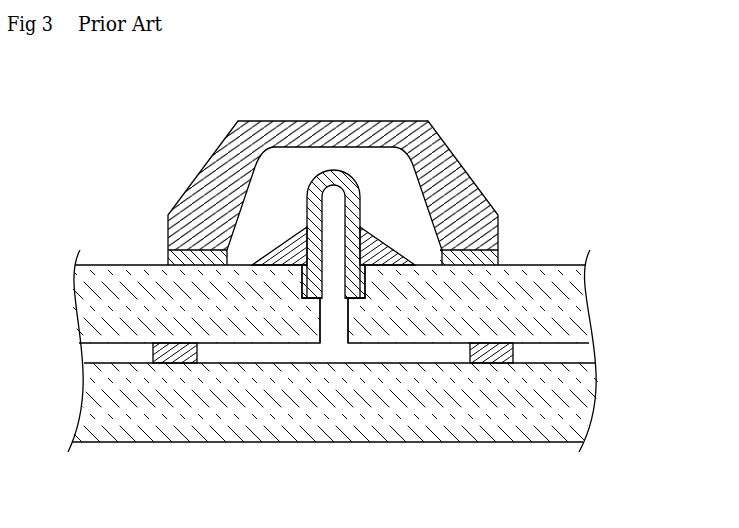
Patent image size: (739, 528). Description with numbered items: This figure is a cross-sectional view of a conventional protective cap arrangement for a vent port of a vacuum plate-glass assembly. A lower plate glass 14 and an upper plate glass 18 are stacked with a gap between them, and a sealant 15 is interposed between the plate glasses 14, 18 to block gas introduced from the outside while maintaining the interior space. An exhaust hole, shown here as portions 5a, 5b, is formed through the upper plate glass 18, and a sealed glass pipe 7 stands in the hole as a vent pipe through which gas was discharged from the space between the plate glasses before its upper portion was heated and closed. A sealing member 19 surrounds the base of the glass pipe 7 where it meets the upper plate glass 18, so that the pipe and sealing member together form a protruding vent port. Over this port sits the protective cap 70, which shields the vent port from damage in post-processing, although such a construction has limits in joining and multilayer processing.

The protective cap 70 is at (313, 126).
The glass pipe 7 is at (349, 180).
The sealing member 19 is at (290, 246).
The upper plate glass 18 is at (571, 316).
The sealant 15 is at (170, 350).
The plate glass 14 is at (456, 430).
The through hole left portion 5a is at (304, 281).
The through hole right portion 5b is at (348, 332).